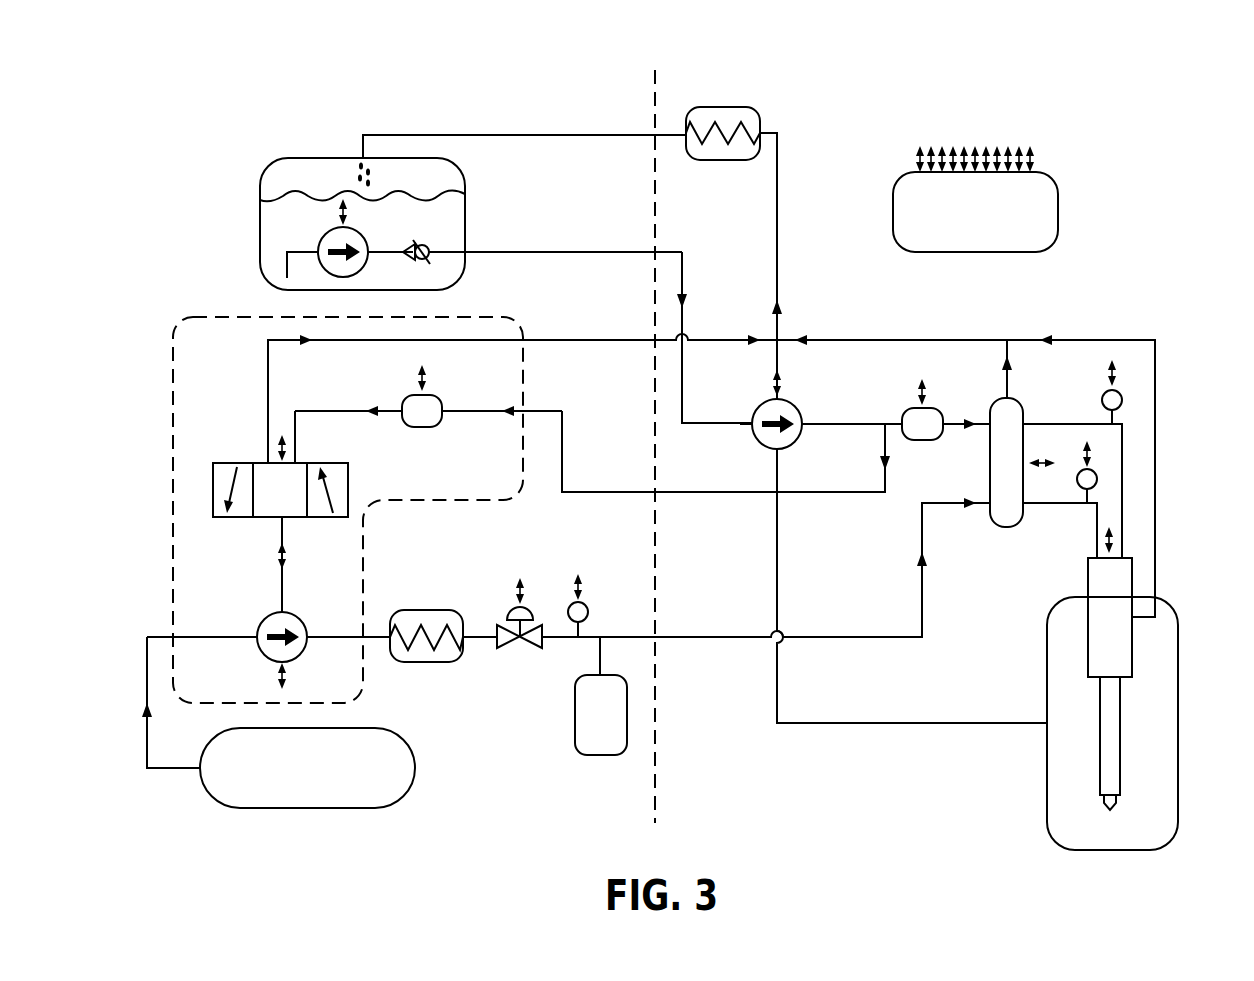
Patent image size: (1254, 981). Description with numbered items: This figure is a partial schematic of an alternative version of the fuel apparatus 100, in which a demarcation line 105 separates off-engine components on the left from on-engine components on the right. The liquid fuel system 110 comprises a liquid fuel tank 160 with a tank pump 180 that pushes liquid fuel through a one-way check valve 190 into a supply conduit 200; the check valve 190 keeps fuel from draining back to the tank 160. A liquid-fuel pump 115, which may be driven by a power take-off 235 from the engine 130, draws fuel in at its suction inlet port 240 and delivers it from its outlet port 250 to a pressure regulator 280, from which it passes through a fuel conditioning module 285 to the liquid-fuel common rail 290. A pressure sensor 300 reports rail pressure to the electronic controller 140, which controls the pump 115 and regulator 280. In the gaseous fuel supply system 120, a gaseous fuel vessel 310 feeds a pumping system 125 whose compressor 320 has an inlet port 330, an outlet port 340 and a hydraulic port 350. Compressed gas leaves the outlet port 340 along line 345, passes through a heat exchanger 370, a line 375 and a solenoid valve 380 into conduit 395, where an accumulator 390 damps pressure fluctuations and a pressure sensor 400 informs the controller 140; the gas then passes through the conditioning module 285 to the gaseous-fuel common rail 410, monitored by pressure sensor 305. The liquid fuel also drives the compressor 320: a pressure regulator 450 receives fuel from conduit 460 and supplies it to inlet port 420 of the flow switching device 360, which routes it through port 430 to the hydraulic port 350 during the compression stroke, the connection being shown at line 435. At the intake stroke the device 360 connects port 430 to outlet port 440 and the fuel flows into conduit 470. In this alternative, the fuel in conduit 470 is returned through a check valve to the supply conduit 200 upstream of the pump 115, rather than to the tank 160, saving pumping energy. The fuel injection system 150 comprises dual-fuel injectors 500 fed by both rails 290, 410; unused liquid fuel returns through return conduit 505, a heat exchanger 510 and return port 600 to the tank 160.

The fuel apparatus 100 is at (1137, 103).
The demarcation line 105 is at (655, 122).
The liquid fuel system 110 is at (197, 147).
The liquid-fuel pump 115 is at (790, 403).
The gaseous fuel supply system 120 is at (128, 326).
The pumping system 125 is at (173, 471).
The engine 130 is at (1207, 298).
The electronic controller 140 is at (1057, 182).
The fuel injection system 150 is at (1177, 503).
The liquid fuel tank 160 is at (465, 207).
The tank pump 180 is at (322, 237).
The one-way check valve 190 is at (417, 243).
The supply conduit 200 is at (683, 383).
The power take-off 235 is at (780, 588).
The suction inlet port 240 is at (752, 437).
The outlet port 250 is at (800, 425).
The pressure regulator 280 is at (922, 442).
The fuel conditioning module 285 is at (1018, 400).
The liquid-fuel common rail 290 is at (1045, 423).
The pressure sensor 300 is at (1138, 348).
The pressure sensor 305 is at (1100, 477).
The gaseous fuel vessel 310 is at (417, 763).
The compressor 320 is at (258, 632).
The inlet port 330 is at (255, 643).
The outlet port 340 is at (308, 640).
The fuel line 345 is at (373, 638).
The hydraulic port 350 is at (277, 607).
The flow switching device 360 is at (350, 490).
The heat exchanger 370 is at (433, 610).
The fuel line 375 is at (480, 640).
The solenoid valve 380 is at (525, 602).
The accumulator 390 is at (573, 738).
The conduit 395 is at (655, 640).
The pressure sensor 400 is at (588, 602).
The gaseous-fuel common rail 410 is at (1043, 508).
The inlet port 420 is at (295, 462).
The port 430 is at (282, 518).
The actuator signal 435 is at (285, 587).
The outlet port 440 is at (267, 462).
The pressure regulator 450 is at (443, 400).
The conduit 460 is at (848, 427).
The conduit 470 is at (425, 342).
The fuel injector 500 is at (1070, 667).
The return conduit 505 is at (780, 278).
The heat exchanger 510 is at (722, 160).
The return port 600 is at (363, 157).